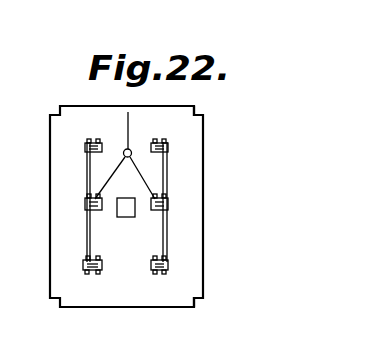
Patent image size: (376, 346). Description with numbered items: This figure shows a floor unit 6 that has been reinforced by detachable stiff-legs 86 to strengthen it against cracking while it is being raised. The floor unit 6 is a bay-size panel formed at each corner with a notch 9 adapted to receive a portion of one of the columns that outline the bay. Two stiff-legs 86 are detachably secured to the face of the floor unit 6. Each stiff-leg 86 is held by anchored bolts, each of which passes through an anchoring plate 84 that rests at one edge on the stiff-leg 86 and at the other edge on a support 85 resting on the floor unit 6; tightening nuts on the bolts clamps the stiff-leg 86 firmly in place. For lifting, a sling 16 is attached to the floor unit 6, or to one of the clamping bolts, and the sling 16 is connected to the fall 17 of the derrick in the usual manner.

The floor unit 6 is at (62, 214).
The notch 9 is at (200, 112).
The sling 16 is at (137, 165).
The fall 17 is at (125, 118).
The anchoring plate 84 is at (150, 261).
The support 85 is at (153, 272).
The stiff-leg 86 is at (86, 178).